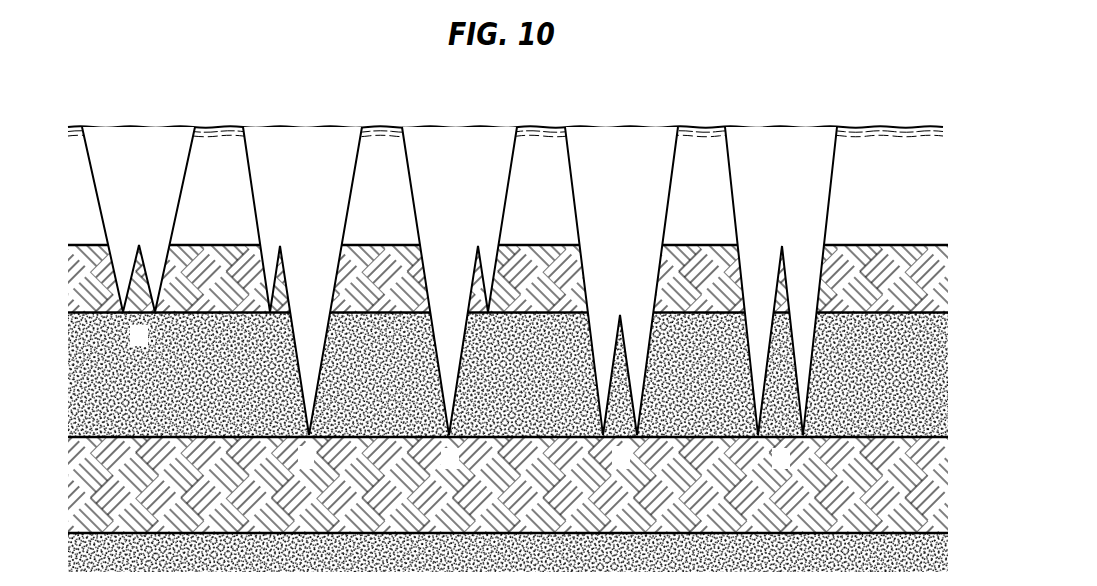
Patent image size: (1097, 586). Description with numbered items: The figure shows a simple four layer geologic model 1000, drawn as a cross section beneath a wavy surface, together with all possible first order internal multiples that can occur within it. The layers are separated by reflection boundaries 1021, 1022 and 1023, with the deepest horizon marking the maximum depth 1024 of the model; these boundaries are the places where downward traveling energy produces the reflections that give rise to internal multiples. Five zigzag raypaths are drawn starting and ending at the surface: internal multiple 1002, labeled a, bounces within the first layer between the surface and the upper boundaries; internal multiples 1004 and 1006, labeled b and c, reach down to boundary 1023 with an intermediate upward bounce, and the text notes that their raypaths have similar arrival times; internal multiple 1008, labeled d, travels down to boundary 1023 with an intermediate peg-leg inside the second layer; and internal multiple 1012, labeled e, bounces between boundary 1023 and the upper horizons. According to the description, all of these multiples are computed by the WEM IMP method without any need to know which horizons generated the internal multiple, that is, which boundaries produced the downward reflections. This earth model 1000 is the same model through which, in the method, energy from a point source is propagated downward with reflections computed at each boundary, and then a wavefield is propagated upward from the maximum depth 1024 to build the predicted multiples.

The four layer geologic model 1000 is at (840, 92).
The internal multiple raypath a 1002 is at (106, 165).
The internal multiple raypath b 1004 is at (335, 165).
The internal multiple raypath c 1006 is at (434, 165).
The internal multiple raypath d 1008 is at (658, 165).
The internal multiple raypath e 1012 is at (749, 165).
The reflection boundary 1021 is at (855, 244).
The reflection boundary 1022 is at (855, 312).
The reflection boundary 1023 is at (855, 436).
The maximum depth 1024 is at (855, 532).